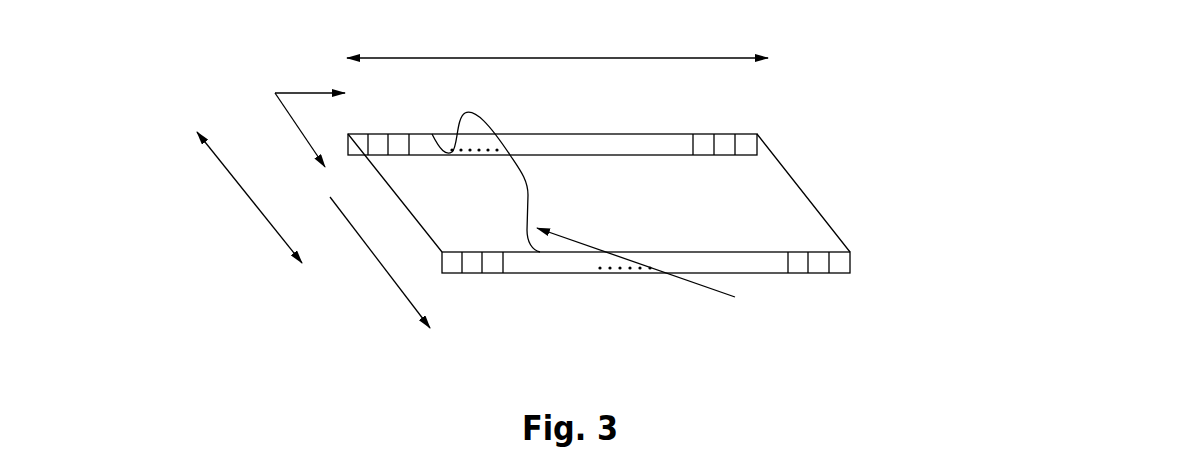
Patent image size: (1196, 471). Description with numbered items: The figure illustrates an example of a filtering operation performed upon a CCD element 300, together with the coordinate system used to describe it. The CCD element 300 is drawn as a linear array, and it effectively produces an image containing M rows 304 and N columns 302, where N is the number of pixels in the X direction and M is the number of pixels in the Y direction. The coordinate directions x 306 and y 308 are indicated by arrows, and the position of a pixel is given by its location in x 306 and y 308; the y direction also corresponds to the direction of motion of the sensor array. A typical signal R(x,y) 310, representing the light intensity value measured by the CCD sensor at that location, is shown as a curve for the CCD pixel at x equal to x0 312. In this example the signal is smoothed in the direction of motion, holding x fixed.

The CCD element 300 is at (785, 170).
The N columns 302 is at (602, 80).
The M rows 304 is at (163, 220).
The x coordinate 306 is at (357, 95).
The y coordinate 308 is at (320, 182).
The signal R(x,y) 310 is at (668, 323).
The CCD pixel at x=x0 312 is at (455, 73).